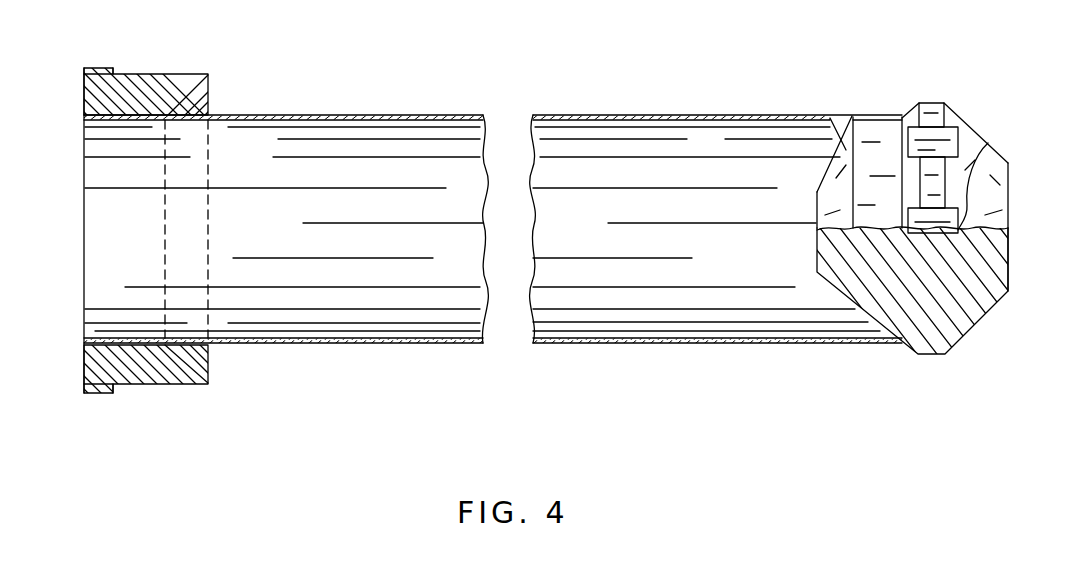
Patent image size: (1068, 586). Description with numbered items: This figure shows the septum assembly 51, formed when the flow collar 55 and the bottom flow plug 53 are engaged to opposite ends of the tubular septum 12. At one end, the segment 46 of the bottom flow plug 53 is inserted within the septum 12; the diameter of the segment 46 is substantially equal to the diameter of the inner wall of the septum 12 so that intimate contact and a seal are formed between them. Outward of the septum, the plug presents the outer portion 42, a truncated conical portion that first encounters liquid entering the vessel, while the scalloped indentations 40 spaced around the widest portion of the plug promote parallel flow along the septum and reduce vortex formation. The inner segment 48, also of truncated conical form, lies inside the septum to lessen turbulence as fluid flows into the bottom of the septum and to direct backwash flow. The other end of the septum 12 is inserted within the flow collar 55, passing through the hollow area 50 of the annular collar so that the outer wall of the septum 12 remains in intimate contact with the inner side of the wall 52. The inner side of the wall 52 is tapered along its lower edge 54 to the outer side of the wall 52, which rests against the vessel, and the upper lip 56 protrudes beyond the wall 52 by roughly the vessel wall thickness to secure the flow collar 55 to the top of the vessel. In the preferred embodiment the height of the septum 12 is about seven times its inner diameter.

The septum 12 is at (426, 114).
The scalloped indentations 40 is at (953, 148).
The outer portion 42 is at (1004, 182).
The segment 46 is at (888, 128).
The inner segment 48 is at (832, 120).
The hollow area 50 is at (97, 283).
The septum assembly 51 is at (442, 457).
The wall 52 is at (140, 82).
The bottom flow plug 53 is at (978, 312).
The lower edge 54 is at (208, 146).
The flow collar 55 is at (204, 384).
The upper lip 56 is at (100, 67).